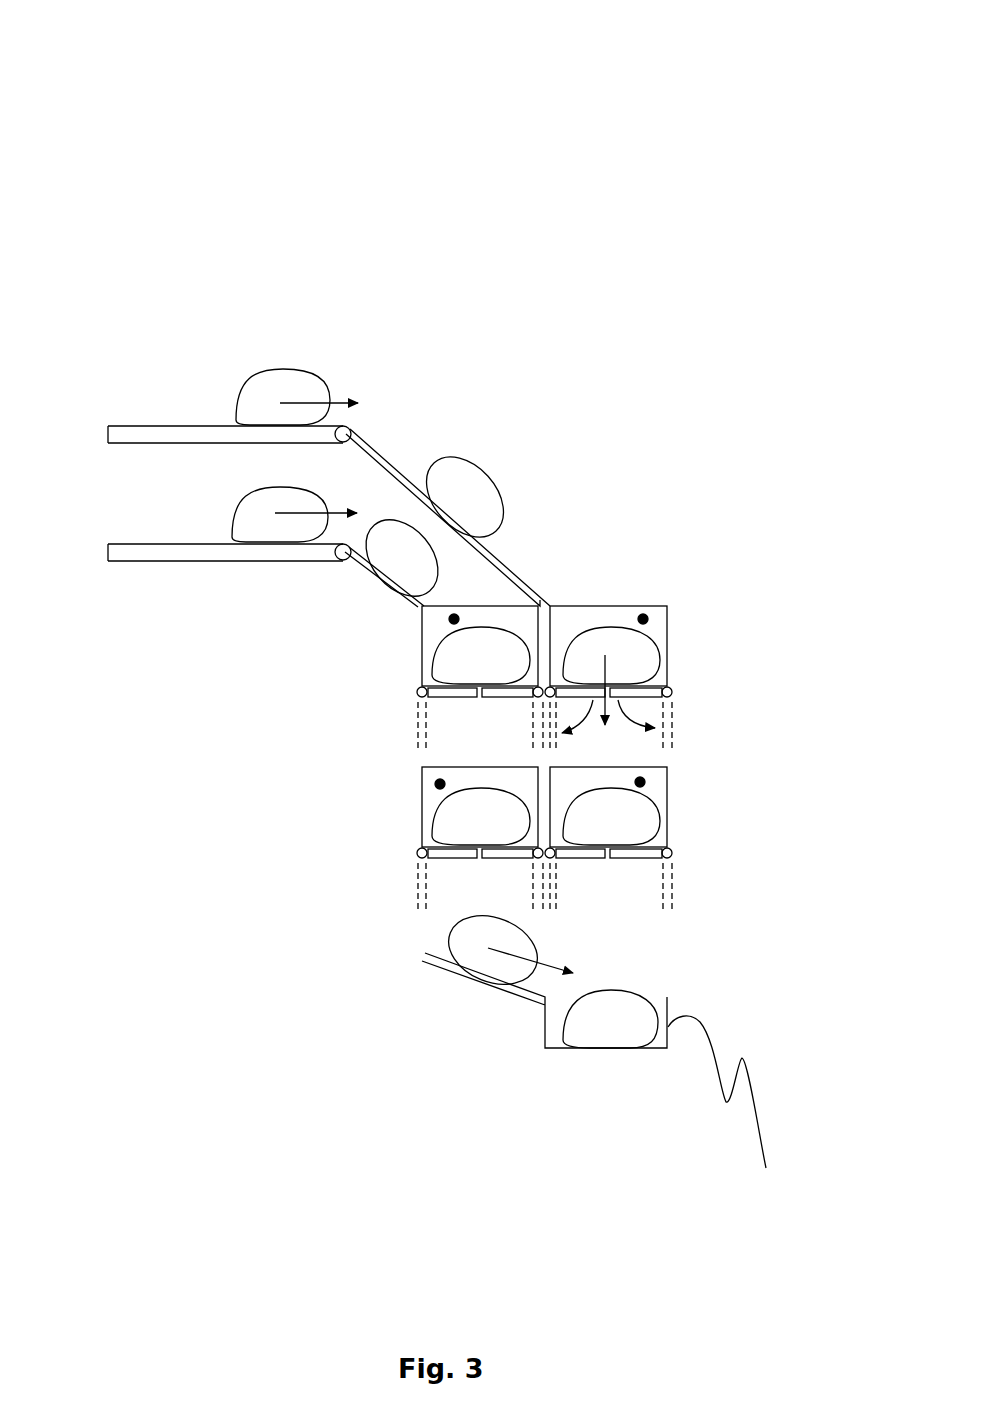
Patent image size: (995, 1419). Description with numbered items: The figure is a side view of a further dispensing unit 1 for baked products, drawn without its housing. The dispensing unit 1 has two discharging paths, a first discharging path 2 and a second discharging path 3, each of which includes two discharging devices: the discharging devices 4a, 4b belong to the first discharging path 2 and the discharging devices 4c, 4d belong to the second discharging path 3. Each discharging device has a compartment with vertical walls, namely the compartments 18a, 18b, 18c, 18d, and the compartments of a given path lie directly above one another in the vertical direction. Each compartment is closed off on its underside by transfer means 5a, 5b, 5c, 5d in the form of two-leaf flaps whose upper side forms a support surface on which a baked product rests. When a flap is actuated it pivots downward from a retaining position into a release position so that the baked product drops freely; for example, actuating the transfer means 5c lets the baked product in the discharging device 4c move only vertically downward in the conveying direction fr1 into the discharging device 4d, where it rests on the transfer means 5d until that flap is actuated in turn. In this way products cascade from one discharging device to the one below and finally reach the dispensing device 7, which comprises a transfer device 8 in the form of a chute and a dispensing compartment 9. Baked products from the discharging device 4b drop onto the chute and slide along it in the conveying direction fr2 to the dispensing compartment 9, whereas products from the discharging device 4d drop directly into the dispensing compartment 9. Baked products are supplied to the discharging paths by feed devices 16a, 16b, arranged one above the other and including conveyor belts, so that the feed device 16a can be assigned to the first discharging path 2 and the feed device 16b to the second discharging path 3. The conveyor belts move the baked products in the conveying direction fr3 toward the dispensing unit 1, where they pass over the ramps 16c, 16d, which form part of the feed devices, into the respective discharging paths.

The dispensing unit 1 is at (200, 168).
The first discharging path 2 is at (530, 363).
The second discharging path 3 is at (662, 363).
The first discharging device 4a is at (369, 658).
The second discharging device 4b is at (381, 808).
The first discharging device 4c is at (691, 636).
The second discharging device 4d is at (694, 792).
The transfer means 5a is at (445, 698).
The transfer means 5b is at (433, 858).
The transfer means 5c is at (697, 693).
The transfer means 5d is at (640, 882).
The dispensing device 7 is at (712, 953).
The transfer device 8 is at (481, 1038).
The dispensing compartment 9 is at (722, 1117).
The feed device 16a is at (226, 606).
The feed device 16b is at (210, 341).
The ramp 16c is at (321, 580).
The ramp 16d is at (484, 512).
The compartment 18a is at (450, 619).
The compartment 18b is at (440, 786).
The compartment 18c is at (740, 594).
The compartment 18d is at (646, 783).
The conveying direction fr1 is at (603, 660).
The conveying direction fr2 is at (512, 1085).
The conveying direction fr3 is at (357, 513).